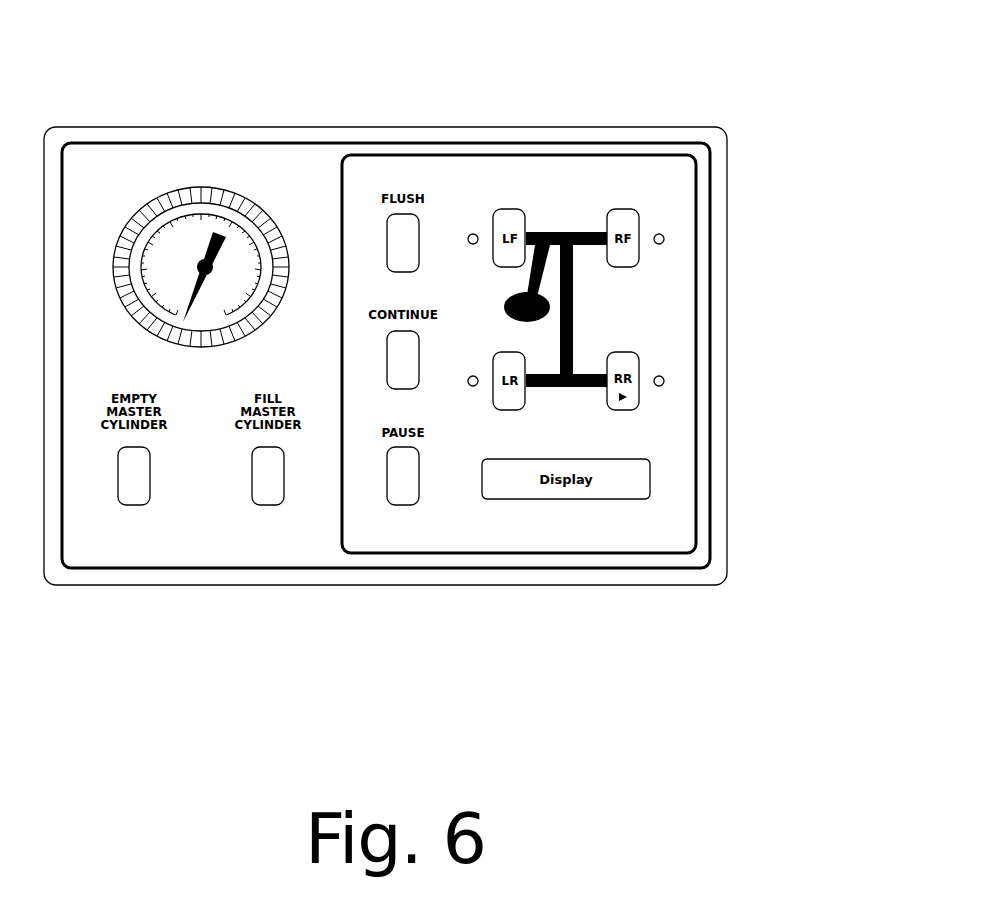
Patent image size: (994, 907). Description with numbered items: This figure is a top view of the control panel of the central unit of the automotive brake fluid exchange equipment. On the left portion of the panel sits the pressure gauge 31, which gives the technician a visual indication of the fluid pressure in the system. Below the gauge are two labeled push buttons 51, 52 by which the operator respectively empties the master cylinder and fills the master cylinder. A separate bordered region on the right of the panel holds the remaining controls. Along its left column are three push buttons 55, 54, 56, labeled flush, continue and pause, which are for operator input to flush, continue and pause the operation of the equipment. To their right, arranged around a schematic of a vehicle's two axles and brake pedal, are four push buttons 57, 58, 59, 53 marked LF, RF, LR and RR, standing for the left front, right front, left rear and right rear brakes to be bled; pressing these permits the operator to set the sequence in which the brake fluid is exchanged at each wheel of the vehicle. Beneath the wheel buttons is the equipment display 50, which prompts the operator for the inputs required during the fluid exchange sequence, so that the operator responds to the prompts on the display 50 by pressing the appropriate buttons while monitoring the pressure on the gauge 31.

The pressure gauge 31 is at (175, 195).
The display 50 is at (535, 492).
The push button 51 is at (134, 497).
The push button 52 is at (268, 497).
The push button 53 is at (630, 363).
The push button 54 is at (408, 357).
The push button 55 is at (393, 243).
The push button 56 is at (403, 497).
The push button 57 is at (512, 220).
The push button 58 is at (627, 220).
The push button 59 is at (500, 397).